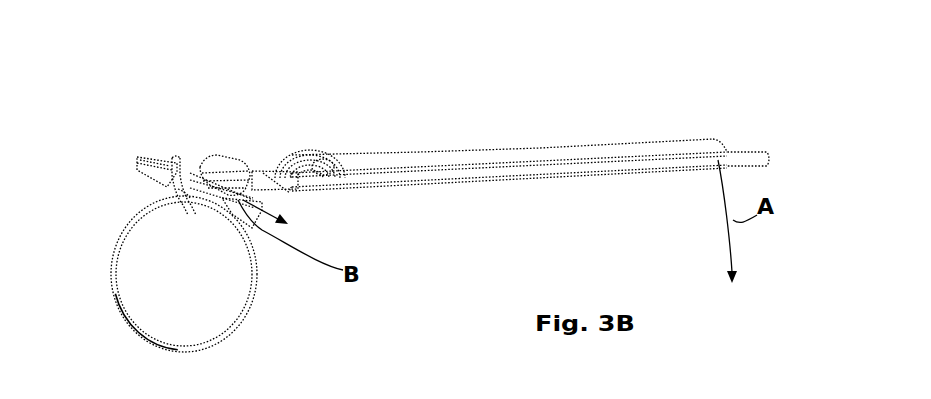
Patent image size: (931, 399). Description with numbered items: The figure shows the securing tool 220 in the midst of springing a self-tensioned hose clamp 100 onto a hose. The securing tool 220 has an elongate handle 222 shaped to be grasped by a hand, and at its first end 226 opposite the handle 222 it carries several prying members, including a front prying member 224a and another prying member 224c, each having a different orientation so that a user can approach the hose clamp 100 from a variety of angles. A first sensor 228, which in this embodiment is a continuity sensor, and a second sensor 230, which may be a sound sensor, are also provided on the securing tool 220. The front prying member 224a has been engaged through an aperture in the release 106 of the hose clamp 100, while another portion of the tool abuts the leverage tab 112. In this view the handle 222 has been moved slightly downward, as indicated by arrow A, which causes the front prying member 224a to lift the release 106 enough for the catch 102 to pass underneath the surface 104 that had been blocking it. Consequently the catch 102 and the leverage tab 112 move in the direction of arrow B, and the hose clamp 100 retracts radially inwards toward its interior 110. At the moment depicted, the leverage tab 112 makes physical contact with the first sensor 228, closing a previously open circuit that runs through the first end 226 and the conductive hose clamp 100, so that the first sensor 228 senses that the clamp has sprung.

The hose clamp 100 is at (88, 216).
The catch 102 is at (216, 198).
The surface 104 is at (178, 189).
The release 106 is at (173, 158).
The interior 110 is at (182, 300).
The leverage tab 112 is at (258, 210).
The securing tool 220 is at (302, 100).
The handle 222 is at (697, 140).
The front prying member 224a is at (141, 156).
The prying member 224c is at (232, 156).
The first end 226 is at (116, 156).
The first sensor 228 is at (290, 207).
The second sensor 230 is at (302, 178).